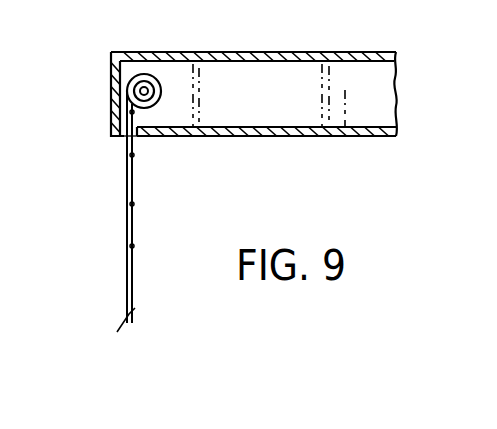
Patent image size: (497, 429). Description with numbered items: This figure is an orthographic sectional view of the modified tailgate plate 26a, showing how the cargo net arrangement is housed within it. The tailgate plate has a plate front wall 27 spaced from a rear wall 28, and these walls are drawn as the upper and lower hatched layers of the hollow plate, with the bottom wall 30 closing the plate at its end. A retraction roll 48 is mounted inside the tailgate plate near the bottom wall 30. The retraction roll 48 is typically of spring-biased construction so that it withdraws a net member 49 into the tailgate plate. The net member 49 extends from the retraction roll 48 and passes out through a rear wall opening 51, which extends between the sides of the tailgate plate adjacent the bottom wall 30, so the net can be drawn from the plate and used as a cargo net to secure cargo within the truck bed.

The modified tailgate plate 26a is at (236, 90).
The plate front wall 27 is at (231, 51).
The rear wall 28 is at (224, 140).
The bottom wall 30 is at (110, 100).
The retraction roll 48 is at (145, 74).
The net member 49 is at (124, 222).
The rear wall opening 51 is at (134, 134).